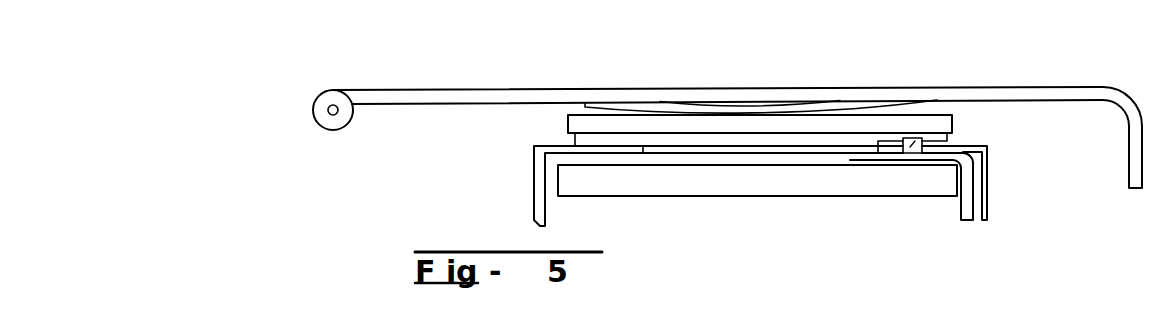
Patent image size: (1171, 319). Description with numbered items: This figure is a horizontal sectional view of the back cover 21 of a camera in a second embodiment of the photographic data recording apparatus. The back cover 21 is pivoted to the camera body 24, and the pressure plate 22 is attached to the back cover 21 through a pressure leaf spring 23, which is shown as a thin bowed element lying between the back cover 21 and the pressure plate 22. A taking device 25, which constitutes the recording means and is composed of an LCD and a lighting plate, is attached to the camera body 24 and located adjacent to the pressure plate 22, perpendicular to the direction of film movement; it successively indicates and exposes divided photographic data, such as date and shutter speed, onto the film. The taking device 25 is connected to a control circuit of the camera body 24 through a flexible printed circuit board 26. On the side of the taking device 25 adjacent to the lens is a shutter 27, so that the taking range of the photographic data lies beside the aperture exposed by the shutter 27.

The back cover 21 is at (338, 106).
The pressure plate 22 is at (905, 125).
The pressure leaf spring 23 is at (880, 104).
The camera body 24 is at (985, 212).
The taking device 25 is at (922, 142).
The flexible printed circuit board 26 is at (975, 183).
The shutter 27 is at (933, 183).